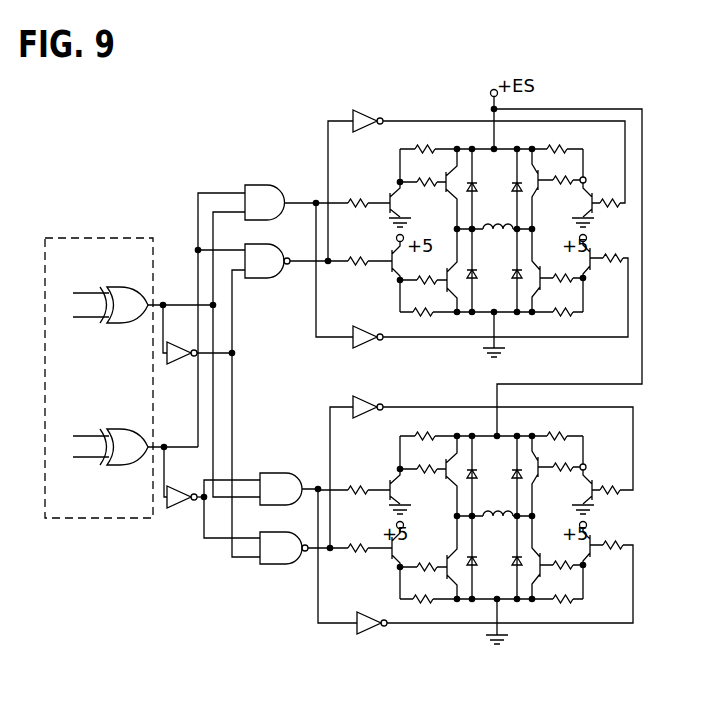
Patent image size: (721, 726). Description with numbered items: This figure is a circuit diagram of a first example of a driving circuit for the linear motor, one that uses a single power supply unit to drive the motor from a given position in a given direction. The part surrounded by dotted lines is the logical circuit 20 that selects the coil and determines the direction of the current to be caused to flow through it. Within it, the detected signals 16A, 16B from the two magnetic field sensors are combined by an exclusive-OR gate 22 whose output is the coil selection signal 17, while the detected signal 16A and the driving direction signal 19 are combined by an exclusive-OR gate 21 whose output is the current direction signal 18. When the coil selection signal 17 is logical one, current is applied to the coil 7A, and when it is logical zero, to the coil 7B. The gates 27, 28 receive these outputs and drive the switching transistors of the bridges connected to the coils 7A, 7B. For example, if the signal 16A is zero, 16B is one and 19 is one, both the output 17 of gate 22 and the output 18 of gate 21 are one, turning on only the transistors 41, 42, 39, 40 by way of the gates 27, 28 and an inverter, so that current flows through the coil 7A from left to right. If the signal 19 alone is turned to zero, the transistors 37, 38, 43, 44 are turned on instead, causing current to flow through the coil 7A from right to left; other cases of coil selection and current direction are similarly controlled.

The coil 7A is at (495, 224).
The coil 7B is at (495, 511).
The detected signal 16A is at (90, 292).
The detected signal 16B is at (85, 459).
The coil selection signal 17 is at (148, 436).
The current direction signal 18 is at (148, 293).
The driving direction signal 19 is at (85, 319).
The logical circuit 20 is at (102, 520).
The exclusive-OR gate 21 is at (130, 324).
The exclusive-OR gate 22 is at (130, 467).
The gate 27 is at (275, 279).
The gate 28 is at (283, 219).
The transistor 37 is at (389, 282).
The transistor 38 is at (452, 266).
The transistor 39 is at (538, 268).
The transistor 40 is at (590, 275).
The transistor 41 is at (397, 182).
The transistor 42 is at (452, 196).
The transistor 43 is at (534, 194).
The transistor 44 is at (589, 184).